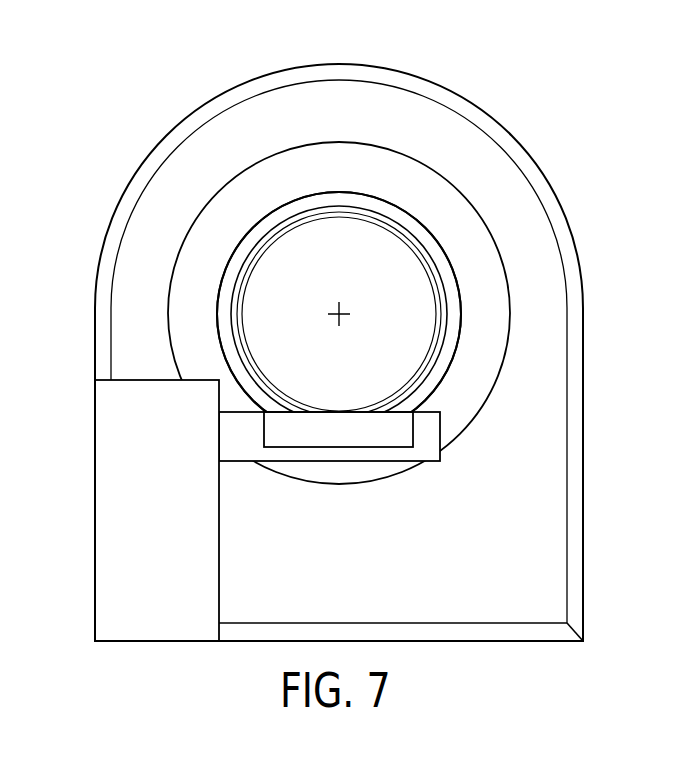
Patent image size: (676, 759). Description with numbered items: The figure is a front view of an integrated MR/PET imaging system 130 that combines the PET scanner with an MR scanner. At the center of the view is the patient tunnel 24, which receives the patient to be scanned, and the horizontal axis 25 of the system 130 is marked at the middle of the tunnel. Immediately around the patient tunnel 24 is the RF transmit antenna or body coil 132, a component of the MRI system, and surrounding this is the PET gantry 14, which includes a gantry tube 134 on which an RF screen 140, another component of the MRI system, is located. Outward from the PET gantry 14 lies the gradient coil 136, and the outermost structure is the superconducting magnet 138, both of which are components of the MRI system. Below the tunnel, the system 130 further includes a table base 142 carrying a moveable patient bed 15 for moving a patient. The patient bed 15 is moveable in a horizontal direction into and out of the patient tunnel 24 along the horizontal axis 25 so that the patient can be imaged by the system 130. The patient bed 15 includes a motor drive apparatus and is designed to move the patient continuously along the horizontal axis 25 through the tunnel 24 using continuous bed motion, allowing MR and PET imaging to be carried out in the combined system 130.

The MR/PET imaging system 130 is at (308, 336).
The superconducting magnet 138 is at (498, 92).
The gradient coil 136 is at (331, 150).
The PET gantry 14 is at (430, 245).
The gantry tube 134 is at (450, 278).
The RF screen 140 is at (441, 302).
The RF transmit antenna or body coil 132 is at (438, 338).
The horizontal axis 25 is at (332, 312).
The patient tunnel 24 is at (302, 373).
The patient bed 15 is at (305, 437).
The table base 142 is at (102, 520).